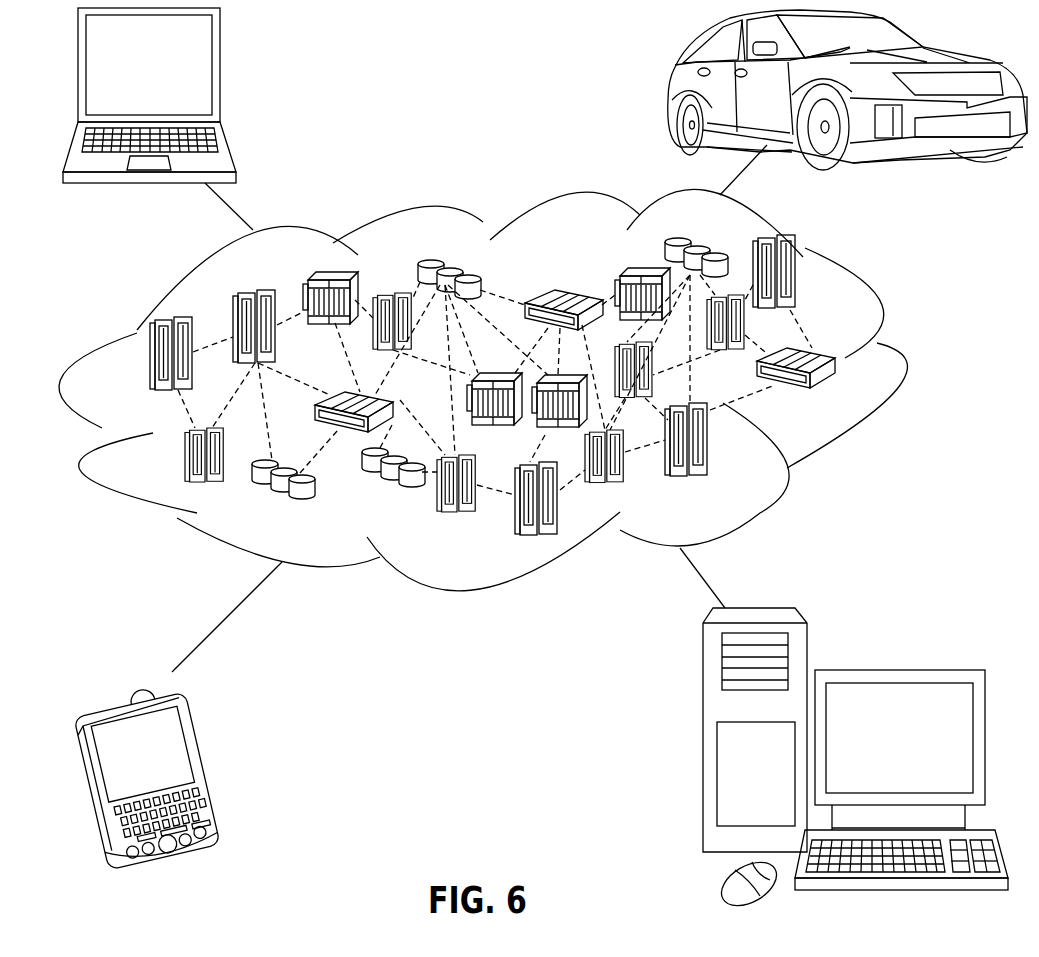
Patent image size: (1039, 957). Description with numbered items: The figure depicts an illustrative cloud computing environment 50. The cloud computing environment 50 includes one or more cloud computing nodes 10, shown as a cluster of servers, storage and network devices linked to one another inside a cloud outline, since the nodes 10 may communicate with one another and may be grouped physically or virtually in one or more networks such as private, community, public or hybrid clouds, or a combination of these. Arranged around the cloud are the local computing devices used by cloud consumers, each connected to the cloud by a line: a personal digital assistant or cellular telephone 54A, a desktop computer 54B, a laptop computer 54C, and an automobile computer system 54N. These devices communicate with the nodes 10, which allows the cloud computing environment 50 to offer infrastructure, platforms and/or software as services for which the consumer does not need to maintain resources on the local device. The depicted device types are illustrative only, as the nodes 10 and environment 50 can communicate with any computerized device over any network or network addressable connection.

The cloud computing nodes 10 is at (848, 400).
The cloud computing environment 50 is at (893, 364).
The personal digital assistant or cellular telephone 54A is at (212, 768).
The desktop computer 54B is at (898, 668).
The laptop computer 54C is at (220, 70).
The automobile computer system 54N is at (672, 96).